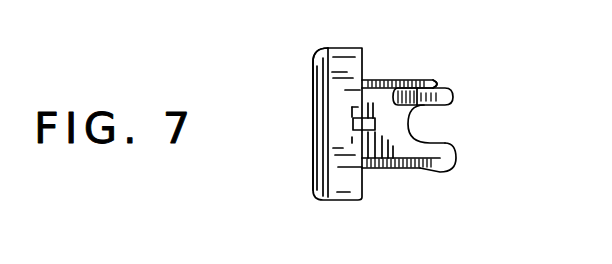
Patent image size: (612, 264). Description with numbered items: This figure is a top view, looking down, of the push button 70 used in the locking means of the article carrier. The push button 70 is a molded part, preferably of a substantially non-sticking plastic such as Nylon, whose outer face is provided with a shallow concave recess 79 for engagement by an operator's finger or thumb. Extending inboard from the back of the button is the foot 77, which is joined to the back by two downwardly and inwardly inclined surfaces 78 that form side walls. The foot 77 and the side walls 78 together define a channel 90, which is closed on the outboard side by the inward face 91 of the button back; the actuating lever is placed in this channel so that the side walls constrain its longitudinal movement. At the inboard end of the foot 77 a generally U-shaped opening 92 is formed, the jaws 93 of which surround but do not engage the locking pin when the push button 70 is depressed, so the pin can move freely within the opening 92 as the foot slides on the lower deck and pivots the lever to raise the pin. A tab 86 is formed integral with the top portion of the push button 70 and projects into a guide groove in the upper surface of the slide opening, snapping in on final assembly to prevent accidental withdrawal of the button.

The push button 70 is at (311, 173).
The foot 77 is at (383, 170).
The inclined surfaces 78 is at (405, 82).
The shallow concave recess 79 is at (313, 103).
The tab 86 is at (353, 127).
The channel 90 is at (428, 91).
The inward face 91 is at (365, 77).
The U-shaped opening 92 is at (447, 142).
The jaws 93 is at (443, 83).